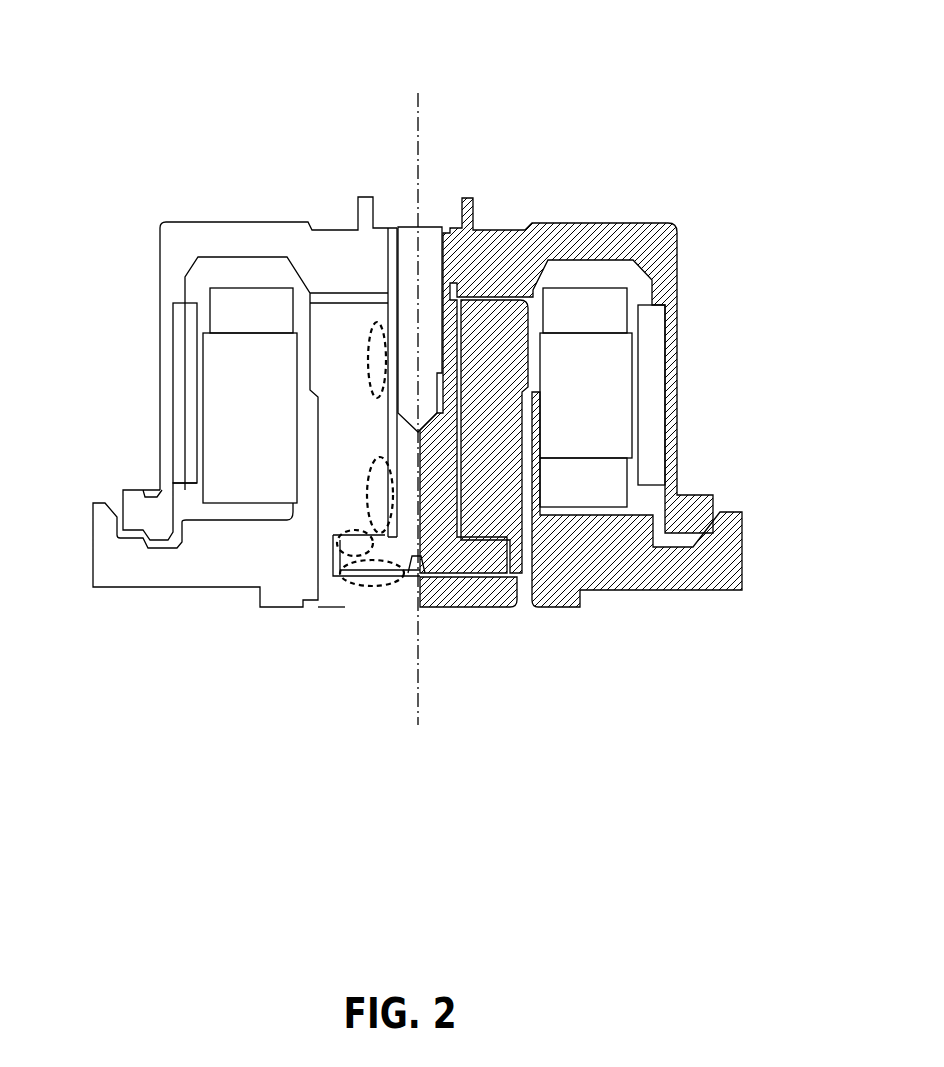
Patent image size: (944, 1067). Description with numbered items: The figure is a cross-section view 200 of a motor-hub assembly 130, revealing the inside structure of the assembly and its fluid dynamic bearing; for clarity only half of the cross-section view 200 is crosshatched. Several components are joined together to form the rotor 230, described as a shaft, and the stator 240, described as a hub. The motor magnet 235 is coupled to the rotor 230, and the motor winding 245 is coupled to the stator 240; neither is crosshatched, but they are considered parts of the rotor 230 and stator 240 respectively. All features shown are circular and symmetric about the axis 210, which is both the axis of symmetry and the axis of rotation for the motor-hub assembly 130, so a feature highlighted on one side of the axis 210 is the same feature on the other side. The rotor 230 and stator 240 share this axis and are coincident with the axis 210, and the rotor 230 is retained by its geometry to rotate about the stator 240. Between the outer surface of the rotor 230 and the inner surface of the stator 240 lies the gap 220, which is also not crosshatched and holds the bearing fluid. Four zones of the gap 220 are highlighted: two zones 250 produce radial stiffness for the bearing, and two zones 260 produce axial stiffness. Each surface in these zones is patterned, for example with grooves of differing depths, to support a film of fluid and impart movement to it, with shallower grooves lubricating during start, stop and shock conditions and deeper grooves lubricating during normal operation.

The cross-section view 200 is at (160, 39).
The axis 210 is at (420, 135).
The motor-hub assembly 130 is at (687, 198).
The gap 220 is at (460, 318).
The rotor 230 is at (660, 277).
The motor magnet 235 is at (648, 358).
The motor winding 245 is at (589, 423).
The stator 240 is at (720, 514).
The zones 250 is at (370, 478).
The zones 260 is at (358, 585).